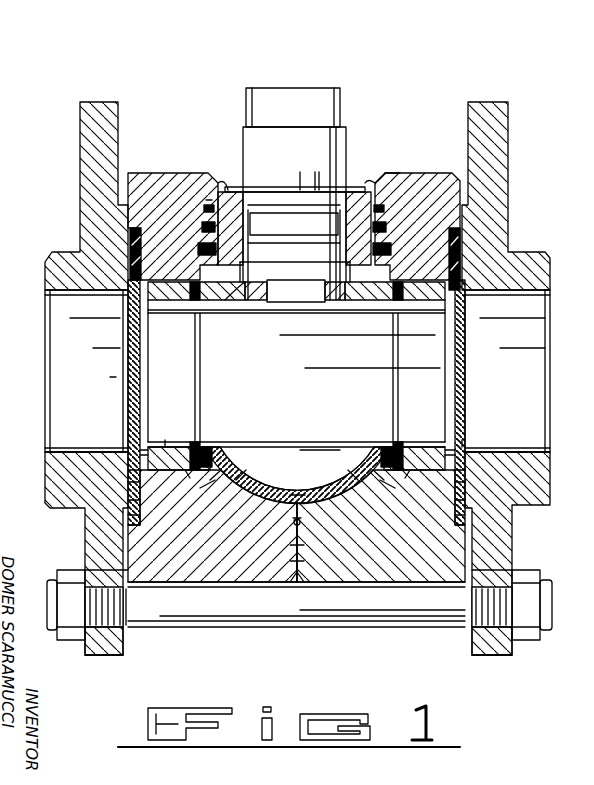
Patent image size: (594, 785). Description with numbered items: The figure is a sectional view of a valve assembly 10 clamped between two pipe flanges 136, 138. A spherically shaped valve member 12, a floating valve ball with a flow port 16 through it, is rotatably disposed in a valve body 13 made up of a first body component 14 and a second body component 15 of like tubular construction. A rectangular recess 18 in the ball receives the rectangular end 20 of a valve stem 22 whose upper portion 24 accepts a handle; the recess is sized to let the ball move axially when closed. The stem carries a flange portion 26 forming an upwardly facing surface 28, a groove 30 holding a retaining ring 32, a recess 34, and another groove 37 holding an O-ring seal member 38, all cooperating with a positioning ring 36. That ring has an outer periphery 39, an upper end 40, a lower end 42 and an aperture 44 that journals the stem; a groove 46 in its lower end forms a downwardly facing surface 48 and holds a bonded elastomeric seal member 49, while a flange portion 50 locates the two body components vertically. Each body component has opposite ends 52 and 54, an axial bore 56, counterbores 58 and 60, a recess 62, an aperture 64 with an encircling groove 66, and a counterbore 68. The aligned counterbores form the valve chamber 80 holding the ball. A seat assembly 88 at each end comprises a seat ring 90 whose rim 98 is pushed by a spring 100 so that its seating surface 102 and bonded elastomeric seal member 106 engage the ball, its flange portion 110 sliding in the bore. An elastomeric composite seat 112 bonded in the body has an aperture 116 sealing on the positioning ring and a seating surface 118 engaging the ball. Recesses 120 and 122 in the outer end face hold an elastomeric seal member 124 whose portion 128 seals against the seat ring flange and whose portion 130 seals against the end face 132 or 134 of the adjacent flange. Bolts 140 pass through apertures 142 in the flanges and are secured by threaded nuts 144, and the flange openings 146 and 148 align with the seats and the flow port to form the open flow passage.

The valve assembly 10 is at (352, 74).
The valve member 12 is at (225, 450).
The valve body 13 is at (174, 172).
The first body component 14 is at (183, 578).
The second body component 15 is at (378, 580).
The flow port 16 is at (310, 445).
The recess 18 is at (262, 300).
The rectangular end 20 is at (313, 290).
The valve stem 22 is at (333, 138).
The upper portion 24 is at (280, 100).
The flange portion 26 is at (318, 282).
The upwardly facing surface 28 is at (270, 270).
The groove 30 is at (304, 188).
The retaining ring 32 is at (270, 188).
The recess 34 is at (328, 220).
The positioning ring 36 is at (222, 185).
The groove 37 is at (250, 270).
The O-ring seal member 38 is at (245, 300).
The outer periphery 39 is at (402, 178).
The upper end 40 is at (372, 190).
The lower end 42 is at (200, 302).
The aperture 44 is at (375, 235).
The groove 46 is at (388, 265).
The downwardly facing surface 48 is at (340, 285).
The elastomeric seal member 49 is at (240, 286).
The flange portion 50 is at (212, 210).
The end 52 is at (130, 582).
The end 54 is at (295, 565).
The bore 56 is at (148, 450).
The counterbore 58 is at (238, 503).
The counterbore 60 is at (190, 472).
The recess 62 is at (292, 532).
The aperture 64 is at (204, 228).
The groove 66 is at (205, 212).
The counterbore 68 is at (200, 246).
The valve chamber 80 is at (282, 482).
The seat assembly 88 is at (165, 440).
The seat ring 90 is at (182, 442).
The rim 98 is at (268, 470).
The spring 100 is at (210, 490).
The seating surface 102 is at (222, 455).
The elastomeric seal member 106 is at (208, 452).
The flange portion 110 is at (148, 455).
The composite seat 112 is at (330, 452).
The aperture 116 is at (200, 264).
The seating surface 118 is at (318, 490).
The recess 120 is at (140, 500).
The recess 122 is at (145, 468).
The elastomeric seal member 124 is at (140, 482).
The portion 128 is at (125, 452).
The portion 130 is at (128, 515).
The end face 132 is at (124, 650).
The end face 134 is at (474, 652).
The flange 136 is at (112, 652).
The flange 138 is at (492, 654).
The bolt 140 is at (235, 612).
The aperture 142 is at (100, 568).
The threaded nut 144 is at (68, 633).
The opening 146 is at (70, 293).
The opening 148 is at (525, 315).